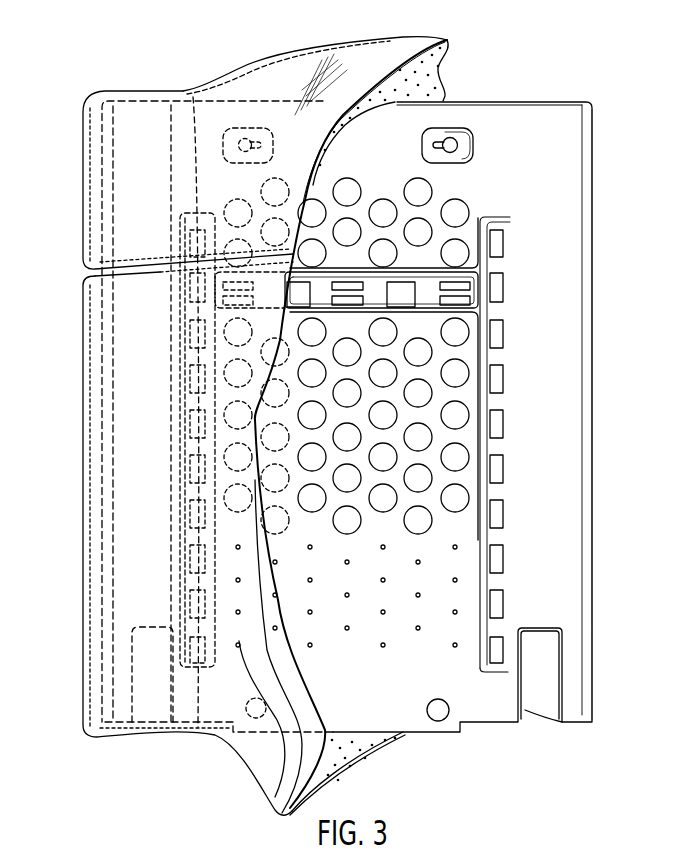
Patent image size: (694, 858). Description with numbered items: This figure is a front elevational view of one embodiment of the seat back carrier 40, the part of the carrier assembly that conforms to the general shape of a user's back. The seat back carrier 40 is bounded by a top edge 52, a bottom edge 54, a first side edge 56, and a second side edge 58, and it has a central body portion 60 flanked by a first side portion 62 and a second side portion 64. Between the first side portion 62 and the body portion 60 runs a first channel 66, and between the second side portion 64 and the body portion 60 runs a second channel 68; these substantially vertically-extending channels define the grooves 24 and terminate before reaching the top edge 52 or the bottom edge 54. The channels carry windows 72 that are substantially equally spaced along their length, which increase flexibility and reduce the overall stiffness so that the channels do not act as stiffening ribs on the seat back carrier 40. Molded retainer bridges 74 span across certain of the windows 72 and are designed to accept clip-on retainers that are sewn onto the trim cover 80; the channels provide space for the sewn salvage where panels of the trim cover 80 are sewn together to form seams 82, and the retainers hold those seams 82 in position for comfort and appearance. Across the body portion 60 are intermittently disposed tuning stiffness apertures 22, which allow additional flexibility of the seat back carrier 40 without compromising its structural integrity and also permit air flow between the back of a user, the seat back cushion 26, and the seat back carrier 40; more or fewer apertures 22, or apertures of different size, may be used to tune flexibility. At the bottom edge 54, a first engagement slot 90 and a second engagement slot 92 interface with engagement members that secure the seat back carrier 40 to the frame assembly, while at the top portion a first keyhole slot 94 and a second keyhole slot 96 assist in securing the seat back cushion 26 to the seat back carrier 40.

The tuning stiffness apertures 22 is at (460, 208).
The grooves 24 is at (165, 188).
The seat back cushion 26 is at (413, 80).
The seat back carrier 40 is at (560, 97).
The top edge 52 is at (455, 98).
The bottom edge 54 is at (428, 733).
The first side edge 56 is at (100, 387).
The second side edge 58 is at (592, 355).
The body portion 60 is at (397, 230).
The first side portion 62 is at (192, 302).
The second side portion 64 is at (540, 442).
The first channel 66 is at (197, 490).
The second channel 68 is at (497, 535).
The windows 72 is at (400, 297).
The retainer bridges 74 is at (350, 290).
The trim cover 80 is at (140, 146).
The seams 82 is at (138, 267).
The first engagement slot 90 is at (150, 663).
The second engagement slot 92 is at (538, 662).
The first keyhole slot 94 is at (230, 127).
The second keyhole slot 96 is at (457, 139).